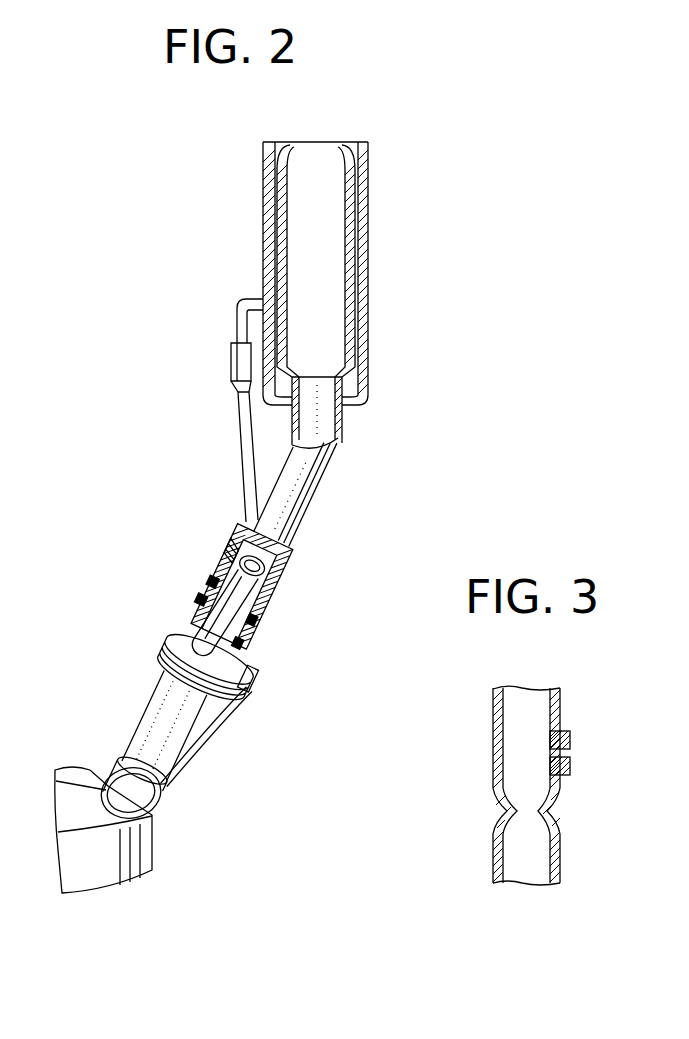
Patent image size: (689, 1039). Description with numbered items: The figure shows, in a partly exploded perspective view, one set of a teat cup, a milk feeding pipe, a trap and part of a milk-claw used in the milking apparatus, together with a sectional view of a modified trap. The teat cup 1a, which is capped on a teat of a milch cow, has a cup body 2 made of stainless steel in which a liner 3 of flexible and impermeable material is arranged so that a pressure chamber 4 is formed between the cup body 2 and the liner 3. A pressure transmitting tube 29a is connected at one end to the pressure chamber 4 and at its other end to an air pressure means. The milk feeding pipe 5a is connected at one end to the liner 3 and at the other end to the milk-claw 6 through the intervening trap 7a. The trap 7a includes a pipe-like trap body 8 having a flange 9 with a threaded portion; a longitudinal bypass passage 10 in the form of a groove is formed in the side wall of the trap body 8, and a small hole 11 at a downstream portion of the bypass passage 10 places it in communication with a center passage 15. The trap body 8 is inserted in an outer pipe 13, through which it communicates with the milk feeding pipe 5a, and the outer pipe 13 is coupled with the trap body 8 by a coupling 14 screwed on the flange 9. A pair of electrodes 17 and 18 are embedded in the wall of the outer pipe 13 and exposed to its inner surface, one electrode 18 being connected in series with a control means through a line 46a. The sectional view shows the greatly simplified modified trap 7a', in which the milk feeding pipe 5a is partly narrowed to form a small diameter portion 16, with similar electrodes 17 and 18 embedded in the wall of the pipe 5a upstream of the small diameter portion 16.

In FIG. 2, the teat cup 1a is at (246, 181).
In FIG. 2, the cup body 2 is at (366, 249).
In FIG. 2, the liner 3 is at (348, 196).
In FIG. 2, the pressure chamber 4 is at (273, 257).
In FIG. 2, the milk feeding pipe 5a is at (320, 488).
In FIG. 3, the milk feeding pipe 5a is at (493, 721).
In FIG. 2, the milk-claw 6 is at (137, 845).
In FIG. 2, the trap 7a is at (150, 710).
In FIG. 3, the modified trap 7a' is at (467, 785).
In FIG. 2, the trap body 8 is at (290, 580).
In FIG. 2, the flange 9 is at (190, 651).
In FIG. 2, the bypass passage 10 is at (238, 604).
In FIG. 2, the small hole 11 is at (224, 631).
In FIG. 2, the outer pipe 13 is at (237, 527).
In FIG. 2, the coupling 14 is at (244, 679).
In FIG. 2, the center passage 15 is at (234, 546).
In FIG. 3, the small diameter portion 16 is at (549, 810).
In FIG. 2, the electrode 17 is at (208, 578).
In FIG. 3, the electrode 17 is at (571, 736).
In FIG. 2, the electrode 18 is at (196, 600).
In FIG. 3, the electrode 18 is at (571, 764).
In FIG. 2, the pressure transmitting tube 29a is at (237, 419).
In FIG. 2, the line 46a is at (210, 720).